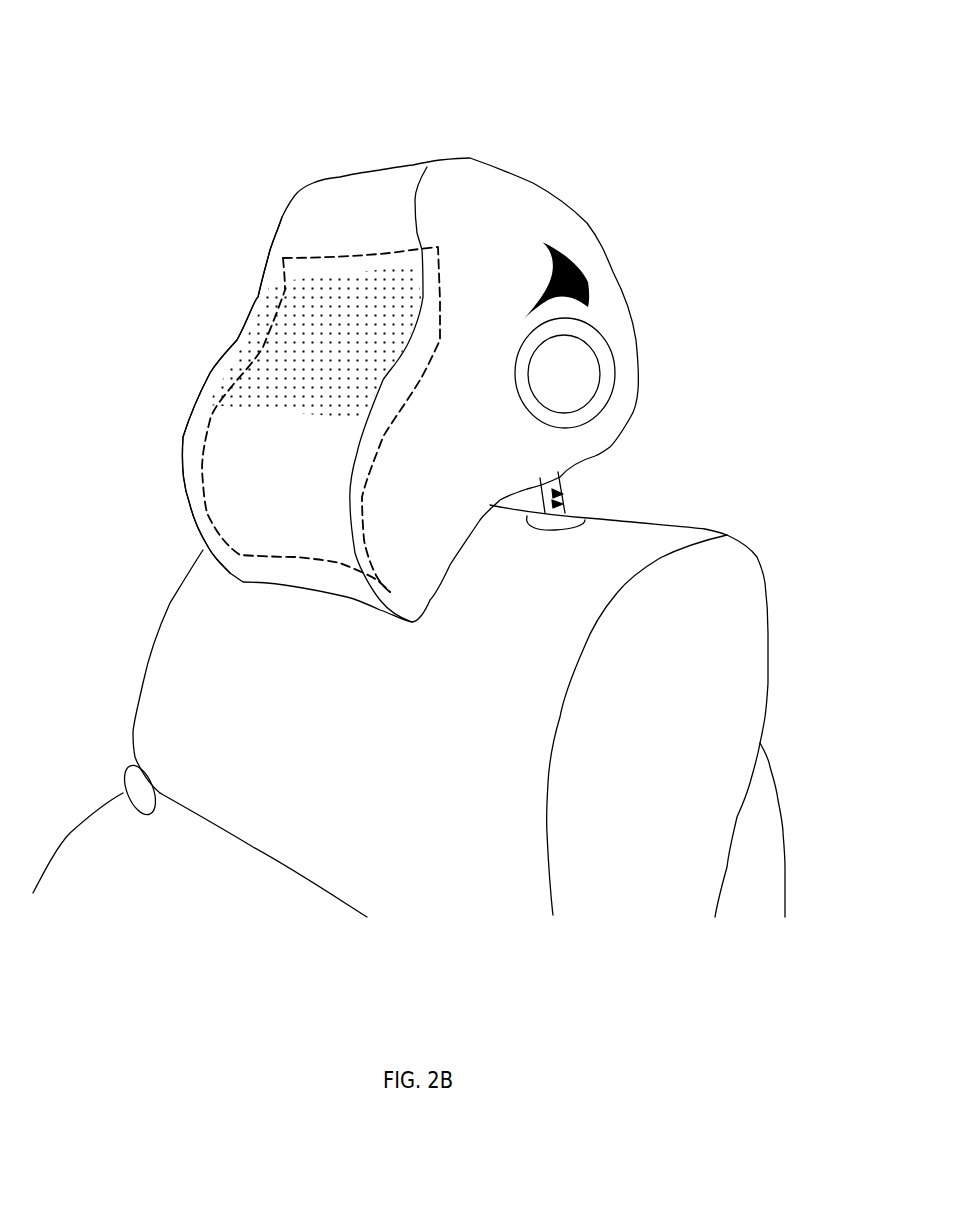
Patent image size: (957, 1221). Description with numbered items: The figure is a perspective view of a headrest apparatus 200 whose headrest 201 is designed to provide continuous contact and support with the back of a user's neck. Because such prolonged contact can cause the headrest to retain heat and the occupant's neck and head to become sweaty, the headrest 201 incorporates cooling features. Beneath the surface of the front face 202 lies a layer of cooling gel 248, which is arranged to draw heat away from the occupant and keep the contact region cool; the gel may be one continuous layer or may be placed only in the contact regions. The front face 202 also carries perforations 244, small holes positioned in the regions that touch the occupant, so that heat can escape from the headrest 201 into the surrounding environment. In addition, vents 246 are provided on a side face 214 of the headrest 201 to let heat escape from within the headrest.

The vehicle seat assembly 200 is at (207, 46).
The headrest 201 is at (475, 170).
The front face 202 is at (186, 519).
The side face 214 is at (637, 358).
The perforations 244 is at (323, 313).
The vents 246 is at (582, 267).
The layer of cooling gel 248 is at (210, 427).